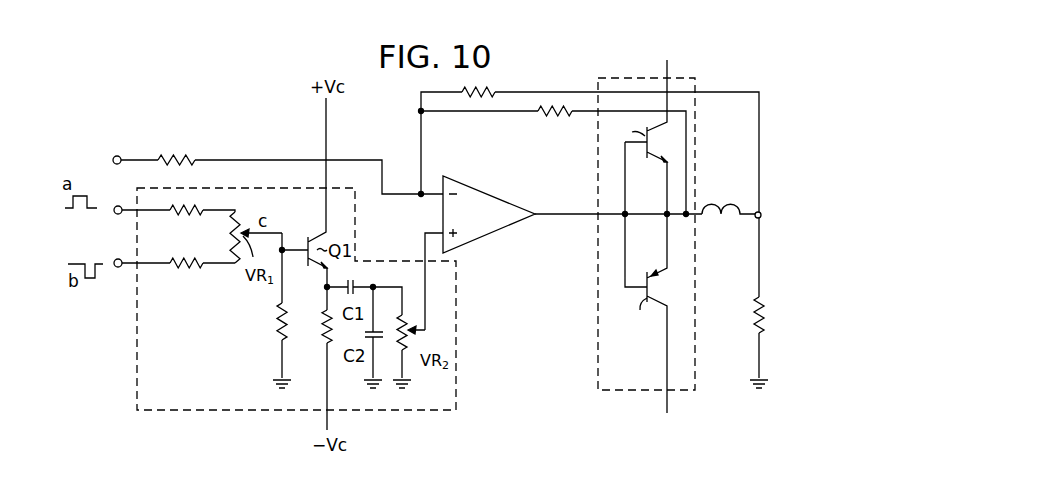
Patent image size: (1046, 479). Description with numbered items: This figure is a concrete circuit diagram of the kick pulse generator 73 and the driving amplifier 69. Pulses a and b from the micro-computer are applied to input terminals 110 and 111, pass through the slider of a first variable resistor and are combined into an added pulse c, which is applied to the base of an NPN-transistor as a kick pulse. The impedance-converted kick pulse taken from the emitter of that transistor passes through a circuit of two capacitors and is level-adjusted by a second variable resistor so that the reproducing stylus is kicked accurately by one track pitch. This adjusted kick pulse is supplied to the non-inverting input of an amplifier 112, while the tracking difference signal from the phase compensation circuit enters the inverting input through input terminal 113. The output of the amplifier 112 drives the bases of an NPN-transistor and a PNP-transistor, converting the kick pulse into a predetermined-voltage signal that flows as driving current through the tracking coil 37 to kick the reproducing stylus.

The input terminal 113 is at (118, 155).
The input terminal 110 is at (117, 206).
The input terminal 111 is at (118, 267).
The amplifier 112 is at (483, 189).
The kick pulse generator 73 is at (458, 372).
The driving amplifier 69 is at (598, 283).
The tracking coil 37 is at (722, 206).